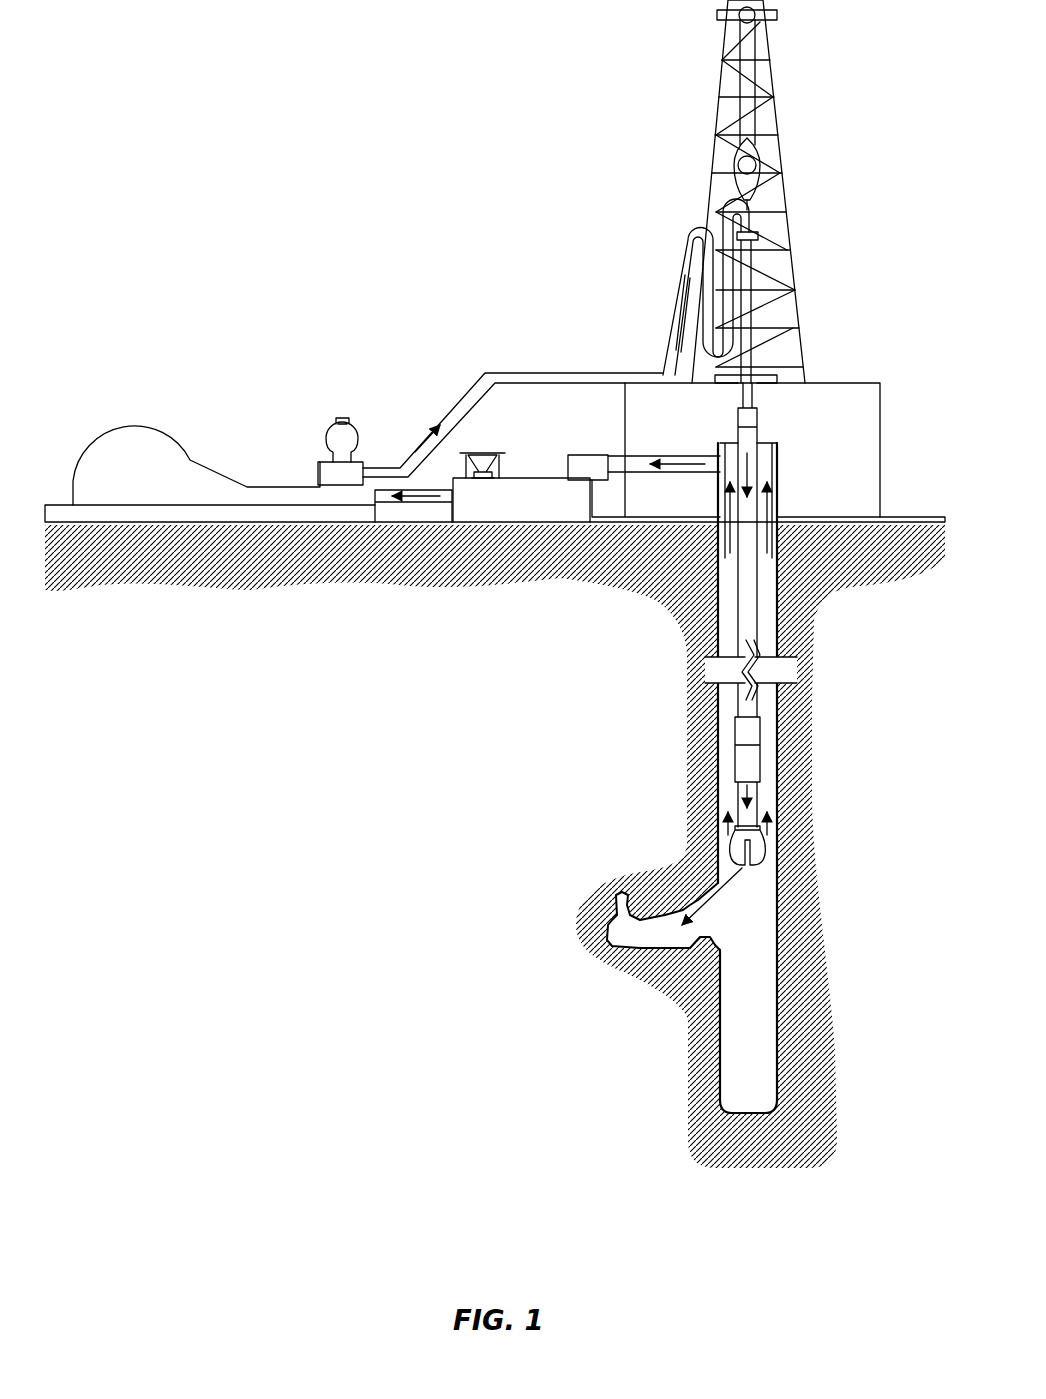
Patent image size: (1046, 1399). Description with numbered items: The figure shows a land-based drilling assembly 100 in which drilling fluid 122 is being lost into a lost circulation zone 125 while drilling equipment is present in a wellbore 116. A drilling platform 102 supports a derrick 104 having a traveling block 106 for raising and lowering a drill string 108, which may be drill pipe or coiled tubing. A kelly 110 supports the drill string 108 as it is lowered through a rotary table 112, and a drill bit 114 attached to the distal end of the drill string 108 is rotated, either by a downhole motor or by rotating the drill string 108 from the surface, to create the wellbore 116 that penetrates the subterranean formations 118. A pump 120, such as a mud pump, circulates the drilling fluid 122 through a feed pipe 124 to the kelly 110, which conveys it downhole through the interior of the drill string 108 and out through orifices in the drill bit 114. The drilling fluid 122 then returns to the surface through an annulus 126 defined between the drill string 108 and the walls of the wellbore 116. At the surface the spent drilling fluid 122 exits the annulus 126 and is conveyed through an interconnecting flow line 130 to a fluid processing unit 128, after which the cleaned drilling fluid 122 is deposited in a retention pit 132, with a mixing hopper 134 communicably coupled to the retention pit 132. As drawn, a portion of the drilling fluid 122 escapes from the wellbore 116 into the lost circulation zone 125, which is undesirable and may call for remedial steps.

The drilling assembly 100 is at (440, 85).
The drilling platform 102 is at (878, 420).
The derrick 104 is at (772, 78).
The traveling block 106 is at (766, 153).
The drill string 108 is at (747, 585).
The kelly 110 is at (748, 300).
The rotary table 112 is at (760, 378).
The drill bit 114 is at (778, 858).
The wellbore 116 is at (777, 720).
The subterranean formations 118 is at (645, 849).
The pump 120 is at (155, 484).
The drilling fluid 122 is at (432, 450).
The feed pipe 124 is at (528, 372).
The lost circulation zone 125 is at (643, 947).
The annulus 126 is at (766, 792).
The fluid processing unit 128 is at (583, 460).
The flow line 130 is at (702, 476).
The retention pit 132 is at (552, 514).
The mixing hopper 134 is at (483, 455).